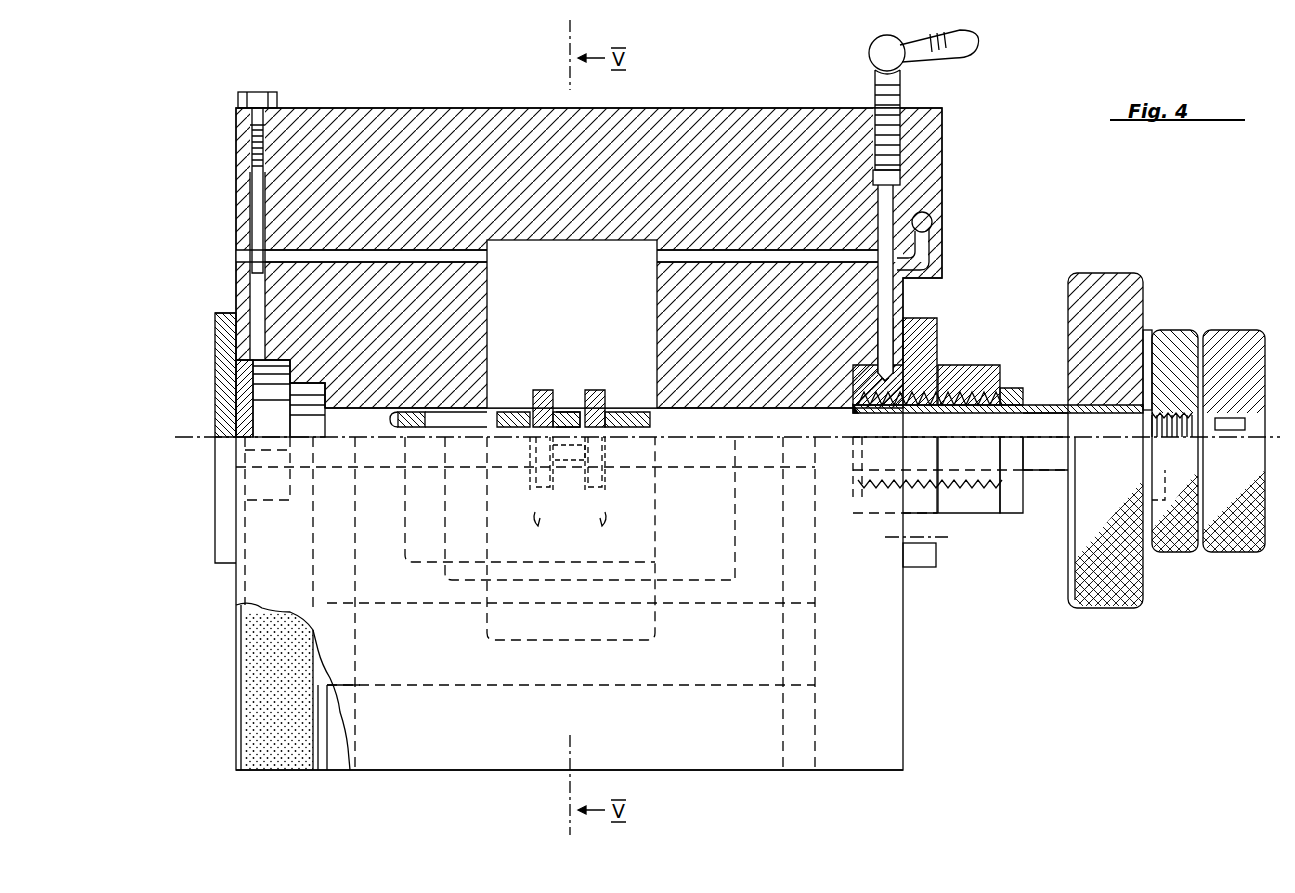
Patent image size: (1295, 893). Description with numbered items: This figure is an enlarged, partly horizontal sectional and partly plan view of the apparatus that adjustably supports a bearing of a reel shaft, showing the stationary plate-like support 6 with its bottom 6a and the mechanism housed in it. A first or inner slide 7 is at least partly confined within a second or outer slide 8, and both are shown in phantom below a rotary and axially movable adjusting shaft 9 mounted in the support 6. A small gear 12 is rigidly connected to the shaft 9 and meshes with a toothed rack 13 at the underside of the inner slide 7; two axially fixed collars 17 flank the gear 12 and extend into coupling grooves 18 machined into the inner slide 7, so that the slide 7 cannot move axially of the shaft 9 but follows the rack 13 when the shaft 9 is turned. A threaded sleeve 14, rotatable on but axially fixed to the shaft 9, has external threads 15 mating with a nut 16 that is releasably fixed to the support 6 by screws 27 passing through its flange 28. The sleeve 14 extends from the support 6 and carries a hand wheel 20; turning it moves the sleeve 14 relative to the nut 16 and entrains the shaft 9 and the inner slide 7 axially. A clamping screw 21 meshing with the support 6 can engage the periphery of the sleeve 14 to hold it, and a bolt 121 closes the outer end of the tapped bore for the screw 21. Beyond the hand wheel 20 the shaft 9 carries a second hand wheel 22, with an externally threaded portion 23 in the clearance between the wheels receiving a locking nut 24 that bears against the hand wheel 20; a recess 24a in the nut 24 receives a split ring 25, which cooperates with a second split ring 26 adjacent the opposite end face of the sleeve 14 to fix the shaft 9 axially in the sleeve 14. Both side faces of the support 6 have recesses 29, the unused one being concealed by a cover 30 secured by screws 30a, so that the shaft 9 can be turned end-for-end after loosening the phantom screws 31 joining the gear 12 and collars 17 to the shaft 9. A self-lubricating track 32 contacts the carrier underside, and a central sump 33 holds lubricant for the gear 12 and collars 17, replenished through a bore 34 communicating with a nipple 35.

The stationary base plate or support 6 is at (358, 132).
The housing bottom 6a is at (748, 752).
The first carriage or slide 7 is at (463, 540).
The second carriage or slide 8 is at (375, 522).
The adjusting shaft 9 is at (1047, 425).
The gear 12 is at (571, 410).
The toothed rack 13 is at (565, 545).
The threaded sleeve 14 is at (922, 395).
The external threads 15 is at (960, 392).
The nut 16 is at (992, 365).
The collars or projections 17 is at (543, 390).
The coupling grooves or ways 18 is at (535, 528).
The hand wheel 20 is at (1113, 290).
The clamping screw 21 is at (960, 50).
The second hand wheel 22 is at (1240, 345).
The externally threaded portion 23 is at (1168, 555).
The locking or holding nut 24 is at (1175, 345).
The recess 24a is at (1165, 497).
The split ring 25 is at (1148, 380).
The second split ring 26 is at (804, 424).
The screws 27 is at (945, 330).
The flange 28 is at (918, 560).
The recess or opening 29 is at (268, 372).
The cover or lid 30 is at (222, 472).
The screws 30a is at (220, 335).
The screws or bolts 31 is at (516, 410).
The tracks 32 is at (260, 716).
The depression or recess 33 is at (542, 296).
The channel or bore 34 is at (720, 255).
The lubricant-admitting nipple 35 is at (932, 222).
The bolt or screw 121 is at (248, 92).